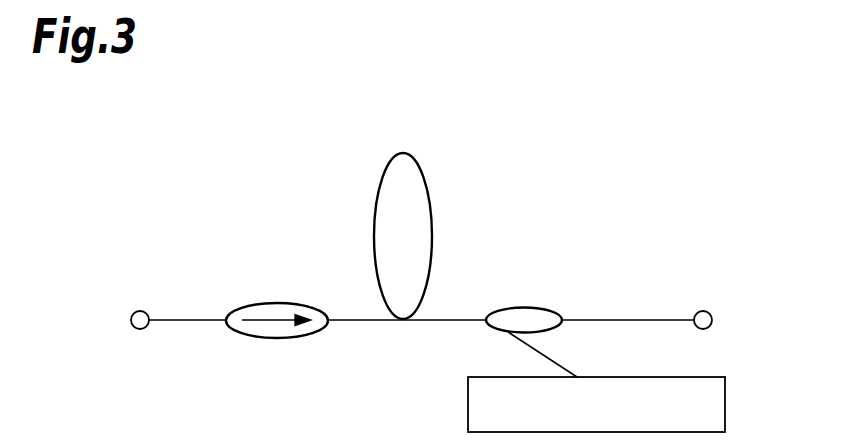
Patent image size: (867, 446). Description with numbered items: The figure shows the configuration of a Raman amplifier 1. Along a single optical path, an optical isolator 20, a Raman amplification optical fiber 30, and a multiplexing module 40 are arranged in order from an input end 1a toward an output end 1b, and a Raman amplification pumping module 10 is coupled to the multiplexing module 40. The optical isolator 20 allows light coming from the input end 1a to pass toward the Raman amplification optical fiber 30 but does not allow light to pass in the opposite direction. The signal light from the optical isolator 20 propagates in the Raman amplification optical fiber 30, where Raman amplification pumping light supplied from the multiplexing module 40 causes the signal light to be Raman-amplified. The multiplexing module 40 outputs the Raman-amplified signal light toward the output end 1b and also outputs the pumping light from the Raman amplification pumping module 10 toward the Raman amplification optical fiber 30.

The Raman amplifier 1 is at (501, 97).
The input end 1a is at (140, 311).
The output end 1b is at (703, 311).
The optical isolator 20 is at (275, 303).
The Raman amplification optical fiber 30 is at (402, 153).
The multiplexing module 40 is at (520, 306).
The Raman amplification pumping module 10 is at (725, 403).